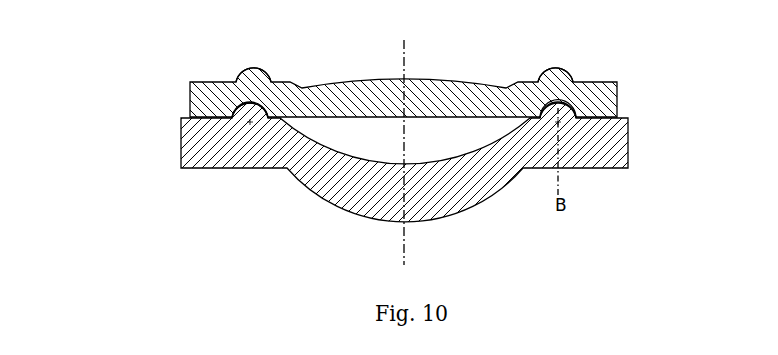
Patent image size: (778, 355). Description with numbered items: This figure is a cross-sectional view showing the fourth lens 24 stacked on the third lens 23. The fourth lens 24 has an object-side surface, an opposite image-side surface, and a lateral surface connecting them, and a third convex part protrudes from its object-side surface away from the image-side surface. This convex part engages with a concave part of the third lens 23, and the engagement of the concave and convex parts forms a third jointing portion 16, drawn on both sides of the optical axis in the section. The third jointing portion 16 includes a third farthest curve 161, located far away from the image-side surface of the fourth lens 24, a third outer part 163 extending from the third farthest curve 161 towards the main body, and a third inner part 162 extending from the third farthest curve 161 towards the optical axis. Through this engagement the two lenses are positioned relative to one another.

The third jointing portion 16 is at (249, 100).
The third farthest curve 161 is at (558, 108).
The third inner part 162 is at (548, 121).
The third outer part 163 is at (570, 121).
The third lens 23 is at (203, 100).
The fourth lens 24 is at (208, 147).